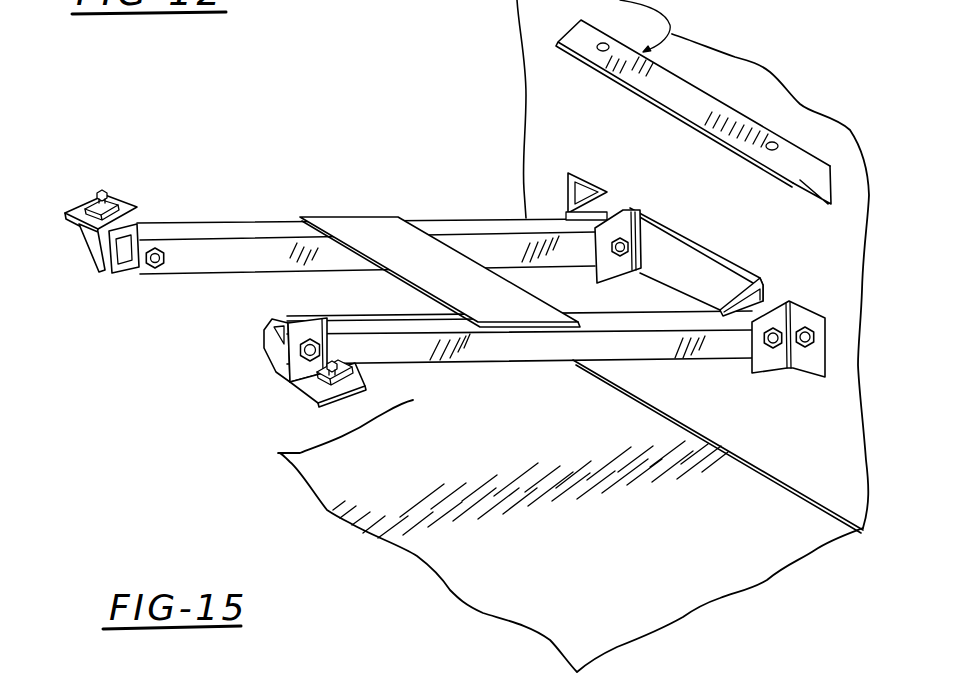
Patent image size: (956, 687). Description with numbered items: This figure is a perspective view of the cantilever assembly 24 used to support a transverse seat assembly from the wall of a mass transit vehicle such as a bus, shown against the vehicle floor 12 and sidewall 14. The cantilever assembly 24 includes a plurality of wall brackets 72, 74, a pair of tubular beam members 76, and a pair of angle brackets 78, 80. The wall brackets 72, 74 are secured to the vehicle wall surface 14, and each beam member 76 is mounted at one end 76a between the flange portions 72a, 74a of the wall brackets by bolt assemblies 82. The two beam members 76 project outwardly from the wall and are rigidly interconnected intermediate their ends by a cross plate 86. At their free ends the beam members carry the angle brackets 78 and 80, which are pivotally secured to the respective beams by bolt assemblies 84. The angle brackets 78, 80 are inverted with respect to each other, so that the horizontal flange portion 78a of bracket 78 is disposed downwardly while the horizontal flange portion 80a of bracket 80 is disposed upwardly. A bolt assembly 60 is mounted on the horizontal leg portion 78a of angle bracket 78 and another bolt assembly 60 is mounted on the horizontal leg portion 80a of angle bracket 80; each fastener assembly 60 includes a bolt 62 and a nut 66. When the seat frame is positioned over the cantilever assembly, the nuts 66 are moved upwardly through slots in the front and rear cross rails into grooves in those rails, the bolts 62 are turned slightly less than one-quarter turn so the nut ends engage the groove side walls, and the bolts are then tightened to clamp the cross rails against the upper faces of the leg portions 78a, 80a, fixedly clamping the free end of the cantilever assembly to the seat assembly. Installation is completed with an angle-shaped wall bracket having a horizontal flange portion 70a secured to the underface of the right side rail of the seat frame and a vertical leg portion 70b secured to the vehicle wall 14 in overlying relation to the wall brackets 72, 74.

The floor 12 is at (620, 564).
The sidewall 14 is at (661, 170).
The cantilever assembly 24 is at (290, 203).
The fastener assembly 60 is at (82, 187).
The bolt 62 is at (102, 190).
The nut 66 is at (120, 199).
The horizontal leg portion 70a is at (597, 74).
The vertical leg portion 70b is at (860, 163).
The wall bracket 72 is at (593, 190).
The flange portion 72a is at (525, 197).
The wall bracket 74 is at (720, 257).
The flange portion 74a is at (613, 267).
The tubular beam member 76 is at (470, 222).
The beam member end 76a is at (725, 358).
The angle bracket 78 is at (268, 371).
The horizontal flange portion 78a is at (325, 394).
The angle bracket 80 is at (150, 208).
The horizontal flange portion 80a is at (72, 225).
The bolt assembly 82 is at (780, 352).
The bolt assembly 84 is at (272, 327).
The cross plate 86 is at (377, 226).